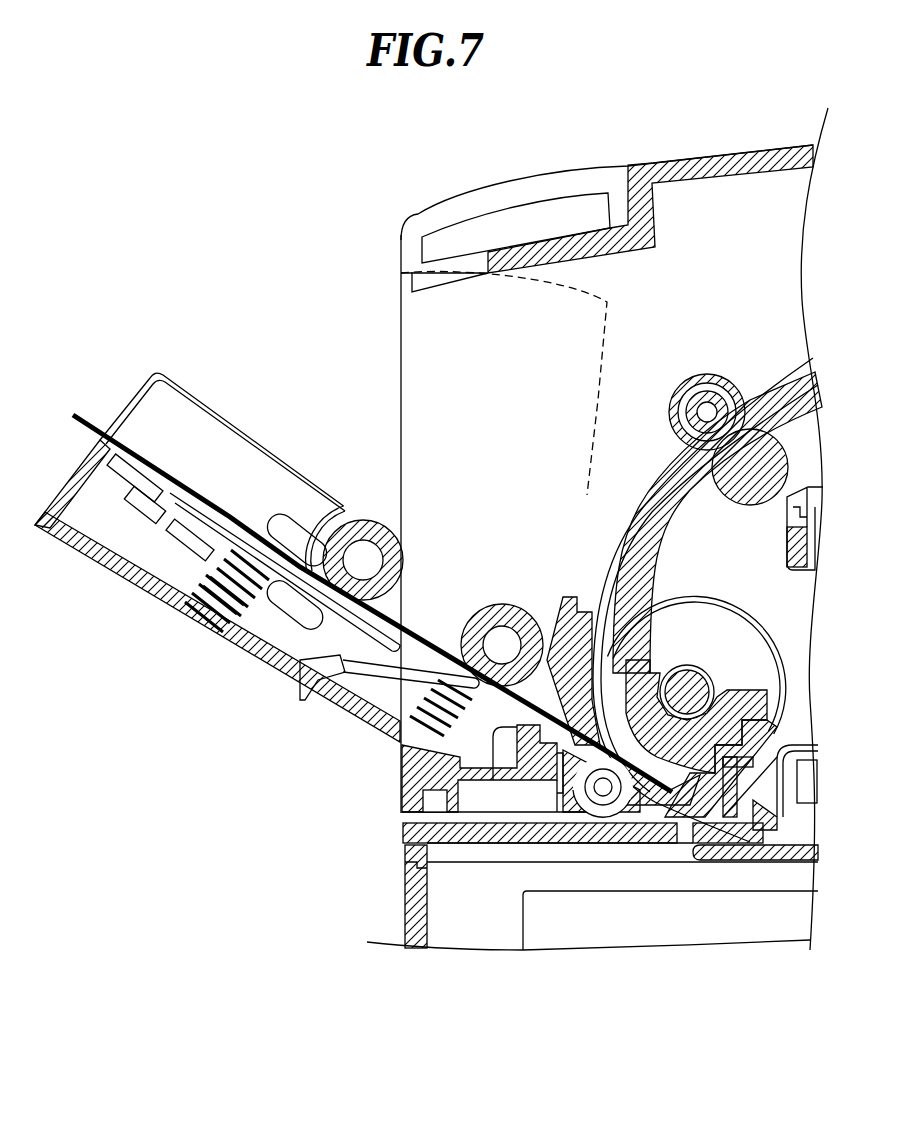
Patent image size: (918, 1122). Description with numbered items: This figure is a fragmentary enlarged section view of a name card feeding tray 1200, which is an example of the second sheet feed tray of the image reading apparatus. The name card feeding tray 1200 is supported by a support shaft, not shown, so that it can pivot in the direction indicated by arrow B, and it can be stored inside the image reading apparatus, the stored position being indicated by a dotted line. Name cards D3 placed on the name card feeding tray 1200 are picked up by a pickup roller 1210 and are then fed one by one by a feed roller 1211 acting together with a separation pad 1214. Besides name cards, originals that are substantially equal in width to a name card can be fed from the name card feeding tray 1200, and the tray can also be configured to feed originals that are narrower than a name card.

The name card feeding tray 1200 is at (117, 430).
The pickup roller 1210 is at (383, 532).
The name cards D3 is at (400, 623).
The separation pad 1214 is at (468, 677).
The feed roller 1211 is at (523, 620).
The arrow B is at (352, 330).